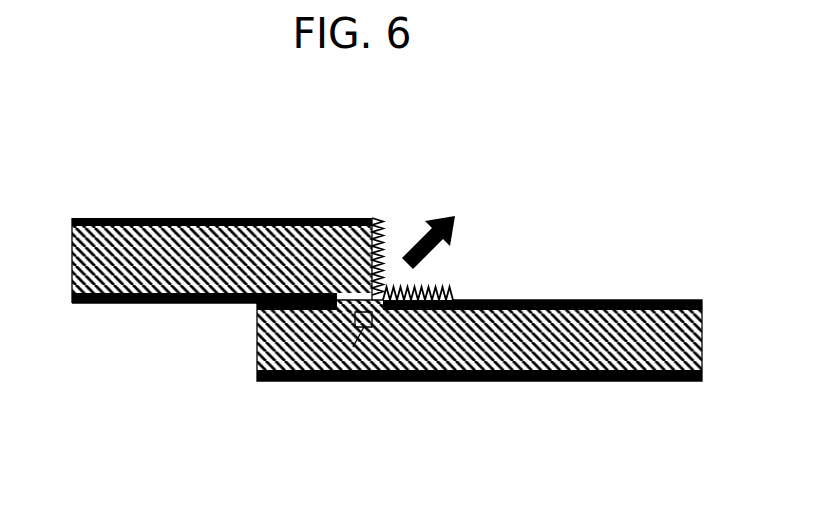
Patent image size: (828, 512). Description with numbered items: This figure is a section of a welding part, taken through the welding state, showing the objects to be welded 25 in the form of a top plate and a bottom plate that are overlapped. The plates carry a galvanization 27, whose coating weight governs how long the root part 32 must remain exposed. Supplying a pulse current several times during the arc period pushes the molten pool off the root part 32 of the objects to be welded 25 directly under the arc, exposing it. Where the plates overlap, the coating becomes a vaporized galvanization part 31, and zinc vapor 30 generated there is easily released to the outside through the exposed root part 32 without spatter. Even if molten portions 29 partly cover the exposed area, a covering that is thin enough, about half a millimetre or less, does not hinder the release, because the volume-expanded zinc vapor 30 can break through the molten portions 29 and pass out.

The objects to be welded 25 is at (132, 237).
The galvanization 27 is at (172, 305).
The molten portions 29 is at (337, 252).
The zinc vapor 30 is at (456, 229).
The vaporized galvanization part 31 is at (353, 347).
The root part 32 is at (376, 312).